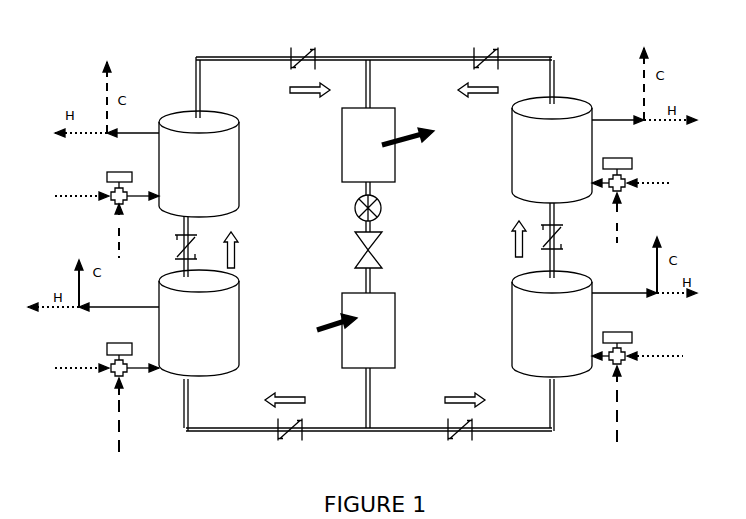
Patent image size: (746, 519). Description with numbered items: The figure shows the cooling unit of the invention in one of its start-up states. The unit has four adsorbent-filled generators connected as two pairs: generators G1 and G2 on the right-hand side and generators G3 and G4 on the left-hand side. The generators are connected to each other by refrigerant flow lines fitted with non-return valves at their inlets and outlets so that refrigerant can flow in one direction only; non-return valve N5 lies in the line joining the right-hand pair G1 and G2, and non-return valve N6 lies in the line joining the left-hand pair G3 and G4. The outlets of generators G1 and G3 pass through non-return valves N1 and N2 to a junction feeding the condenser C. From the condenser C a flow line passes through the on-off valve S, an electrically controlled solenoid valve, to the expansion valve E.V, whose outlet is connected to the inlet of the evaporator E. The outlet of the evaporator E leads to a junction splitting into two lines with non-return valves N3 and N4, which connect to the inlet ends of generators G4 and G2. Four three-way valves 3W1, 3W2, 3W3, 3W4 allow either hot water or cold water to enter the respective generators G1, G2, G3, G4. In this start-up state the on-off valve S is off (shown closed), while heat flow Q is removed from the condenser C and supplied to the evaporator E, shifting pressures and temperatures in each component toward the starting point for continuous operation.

The non-return valve N1 is at (486, 50).
The non-return valve N2 is at (303, 50).
The non-return valve N3 is at (290, 443).
The non-return valve N4 is at (460, 443).
The non-return valve N5 is at (570, 240).
The non-return valve N6 is at (167, 252).
The generator G1 is at (552, 150).
The generator G2 is at (552, 324).
The generator G3 is at (199, 164).
The generator G4 is at (199, 323).
The three-way valve 3W1 is at (632, 200).
The three-way valve 3W2 is at (637, 387).
The three-way valve 3W3 is at (99, 215).
The three-way valve 3W4 is at (106, 398).
The condenser C is at (368, 145).
The evaporator E is at (368, 330).
The expansion valve E.V is at (344, 250).
The on-off valve S is at (409, 208).
The heat flow Q is at (370, 237).